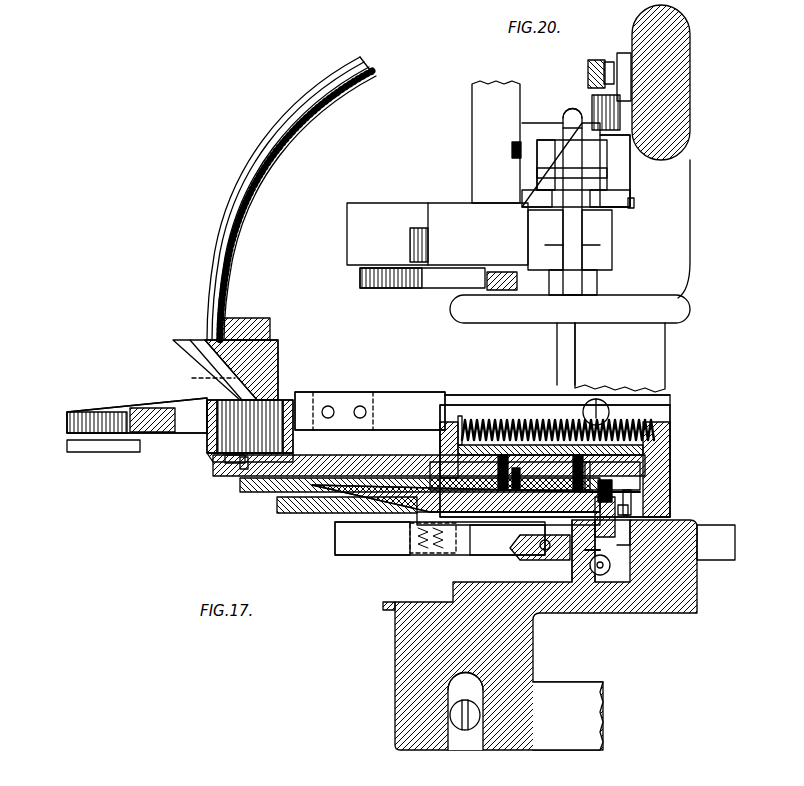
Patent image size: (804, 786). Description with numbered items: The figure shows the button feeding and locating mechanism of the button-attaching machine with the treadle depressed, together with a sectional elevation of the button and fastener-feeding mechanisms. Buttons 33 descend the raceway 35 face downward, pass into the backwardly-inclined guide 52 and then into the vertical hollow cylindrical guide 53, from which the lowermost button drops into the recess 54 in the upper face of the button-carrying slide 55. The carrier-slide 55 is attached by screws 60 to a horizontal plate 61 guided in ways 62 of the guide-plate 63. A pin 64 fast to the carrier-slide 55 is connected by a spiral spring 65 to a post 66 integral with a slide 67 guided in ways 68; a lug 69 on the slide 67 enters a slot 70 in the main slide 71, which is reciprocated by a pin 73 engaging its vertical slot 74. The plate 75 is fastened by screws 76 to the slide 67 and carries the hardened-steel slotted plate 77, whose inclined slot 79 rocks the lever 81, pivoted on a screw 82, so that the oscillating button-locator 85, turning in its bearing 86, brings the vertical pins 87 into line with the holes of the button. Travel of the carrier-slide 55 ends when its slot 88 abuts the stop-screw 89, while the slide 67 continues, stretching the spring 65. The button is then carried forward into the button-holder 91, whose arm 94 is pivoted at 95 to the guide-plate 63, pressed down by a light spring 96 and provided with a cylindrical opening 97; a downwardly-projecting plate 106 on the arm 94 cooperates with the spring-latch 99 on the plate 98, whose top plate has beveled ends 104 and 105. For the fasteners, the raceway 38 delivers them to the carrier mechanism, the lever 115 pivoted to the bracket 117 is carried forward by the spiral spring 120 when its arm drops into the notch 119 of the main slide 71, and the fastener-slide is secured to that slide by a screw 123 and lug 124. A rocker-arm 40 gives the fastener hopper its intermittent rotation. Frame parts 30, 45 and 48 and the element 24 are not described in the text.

In FIG. 20, the frame standard 30 is at (672, 140).
In FIG. 17, the button 33 is at (240, 192).
In FIG. 17, the raceway 35 is at (232, 284).
In FIG. 20, the raceway 38 is at (475, 103).
In FIG. 17, the rocker-arm 40 is at (97, 445).
In FIG. 17, the base 45 is at (603, 722).
In FIG. 17, the plate 48 is at (356, 545).
In FIG. 17, the backwardly-inclined guide 52 is at (193, 345).
In FIG. 17, the vertical hollow cylindrical guide 53 is at (305, 400).
In FIG. 17, the recess 54 is at (215, 462).
In FIG. 20, the button-carrying slide 55 is at (540, 160).
In FIG. 17, the button-carrying slide 55 is at (280, 490).
In FIG. 17, the screws 60 is at (583, 405).
In FIG. 20, the horizontal plate 61 is at (565, 120).
In FIG. 17, the horizontal plate 61 is at (595, 462).
In FIG. 20, the ways 62 is at (625, 110).
In FIG. 20, the guide-plate 63 is at (537, 160).
In FIG. 17, the guide-plate 63 is at (295, 515).
In FIG. 17, the pin 64 is at (440, 430).
In FIG. 20, the spiral spring 65 is at (562, 115).
In FIG. 17, the spiral spring 65 is at (520, 425).
In FIG. 20, the post 66 is at (615, 172).
In FIG. 17, the post 66 is at (650, 445).
In FIG. 20, the slide 67 is at (632, 205).
In FIG. 17, the slide 67 is at (640, 506).
In FIG. 20, the ways 68 is at (540, 198).
In FIG. 17, the lug 69 is at (600, 575).
In FIG. 17, the slot 70 is at (620, 590).
In FIG. 20, the main slide 71 is at (600, 290).
In FIG. 17, the main slide 71 is at (670, 615).
In FIG. 17, the pin 73 is at (455, 715).
In FIG. 17, the vertical slot 74 is at (450, 676).
In FIG. 20, the plate 75 is at (557, 200).
In FIG. 17, the plate 75 is at (400, 470).
In FIG. 17, the screws 76 is at (596, 510).
In FIG. 17, the hardened-steel slotted plate 77 is at (632, 500).
In FIG. 17, the inclined slot 79 is at (630, 490).
In FIG. 20, the lever 81 is at (548, 173).
In FIG. 17, the lever 81 is at (460, 492).
In FIG. 17, the screw 82 is at (520, 492).
In FIG. 17, the oscillating button-locator 85 is at (245, 468).
In FIG. 17, the bearing 86 is at (230, 465).
In FIG. 17, the vertical pins 87 is at (248, 478).
In FIG. 17, the slot 88 is at (612, 485).
In FIG. 20, the stop-screw 89 is at (512, 148).
In FIG. 17, the button-holder 91 is at (67, 422).
In FIG. 20, the arm 94 is at (600, 98).
In FIG. 17, the arm 94 is at (213, 430).
In FIG. 17, the pivot 95 is at (640, 400).
In FIG. 20, the light spring 96 is at (596, 62).
In FIG. 17, the cylindrical opening 97 is at (95, 412).
In FIG. 20, the plate 98 is at (605, 238).
In FIG. 17, the plate 98 is at (718, 560).
In FIG. 17, the spring-latch 99 is at (432, 553).
In FIG. 17, the beveled end 104 is at (360, 525).
In FIG. 17, the beveled end 105 is at (486, 525).
In FIG. 17, the downwardly-projecting plate 106 is at (390, 405).
In FIG. 20, the lever 115 is at (440, 290).
In FIG. 20, the bracket 117 is at (475, 250).
In FIG. 17, the notch 119 is at (430, 594).
In FIG. 20, the spiral spring 120 is at (500, 290).
In FIG. 17, the screw 123 is at (540, 548).
In FIG. 17, the lug 124 is at (590, 570).
In FIG. 17, the pin 24 is at (468, 430).